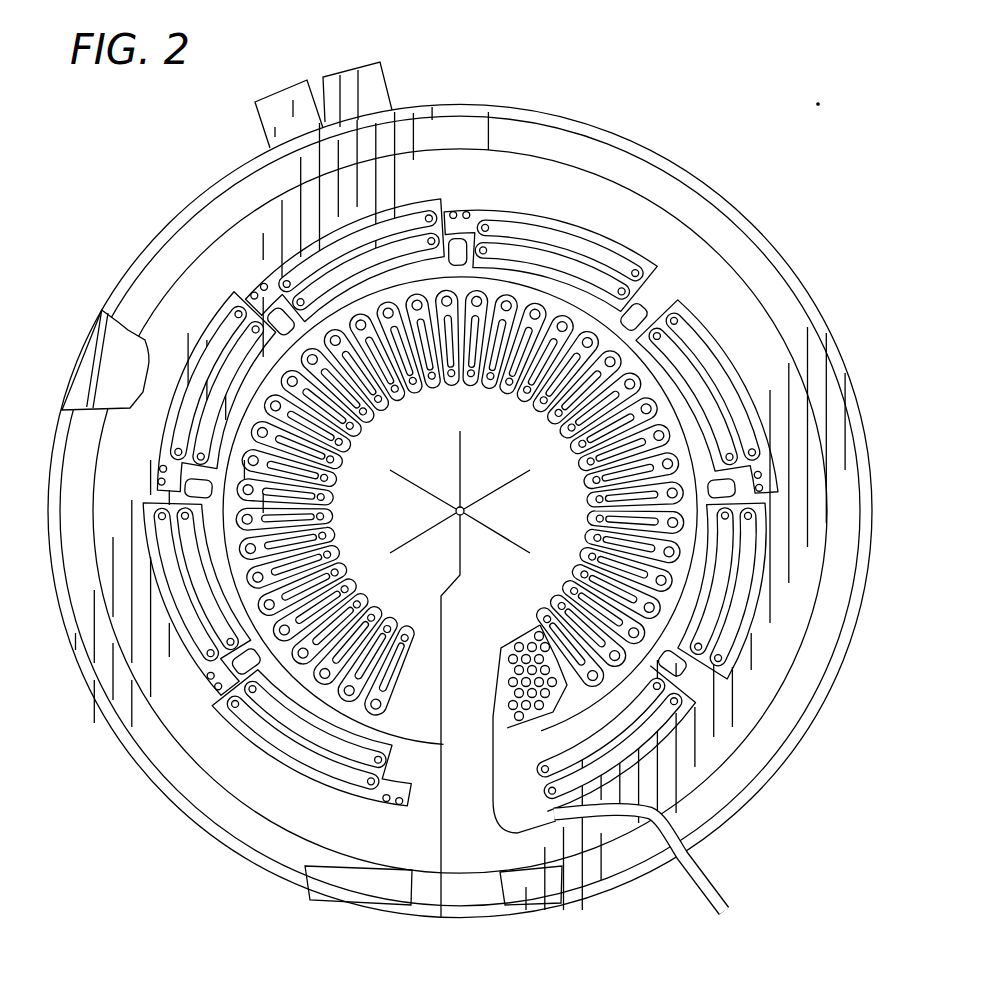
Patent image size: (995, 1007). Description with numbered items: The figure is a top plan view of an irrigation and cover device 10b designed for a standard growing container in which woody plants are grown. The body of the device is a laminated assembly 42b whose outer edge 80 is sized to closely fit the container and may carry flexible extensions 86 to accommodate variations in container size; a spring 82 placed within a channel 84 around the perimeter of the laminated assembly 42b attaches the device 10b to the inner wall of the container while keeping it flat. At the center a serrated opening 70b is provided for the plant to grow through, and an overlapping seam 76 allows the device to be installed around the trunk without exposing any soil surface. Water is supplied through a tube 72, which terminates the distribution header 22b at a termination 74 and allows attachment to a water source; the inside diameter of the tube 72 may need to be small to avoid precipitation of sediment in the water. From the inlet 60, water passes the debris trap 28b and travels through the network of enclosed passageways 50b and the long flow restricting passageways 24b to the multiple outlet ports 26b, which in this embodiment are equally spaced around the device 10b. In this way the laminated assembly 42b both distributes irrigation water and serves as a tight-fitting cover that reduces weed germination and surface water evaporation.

The device 10b is at (447, 486).
The outer edge 80 is at (649, 131).
The channel 84 is at (157, 272).
The spring 82 is at (96, 362).
The flexible extensions 86 is at (341, 80).
The laminated assembly 42b is at (670, 236).
The enclosed passageways 50b is at (412, 217).
The outlet ports 26b is at (305, 290).
The flow restricting passageways 24b is at (258, 738).
The debris trap 28b is at (522, 642).
The distribution header 22b is at (493, 810).
The serrated opening 70b is at (463, 507).
The overlapping seam 76 is at (441, 870).
The termination 74 is at (548, 827).
The inlet 60 is at (565, 825).
The tube 72 is at (712, 910).